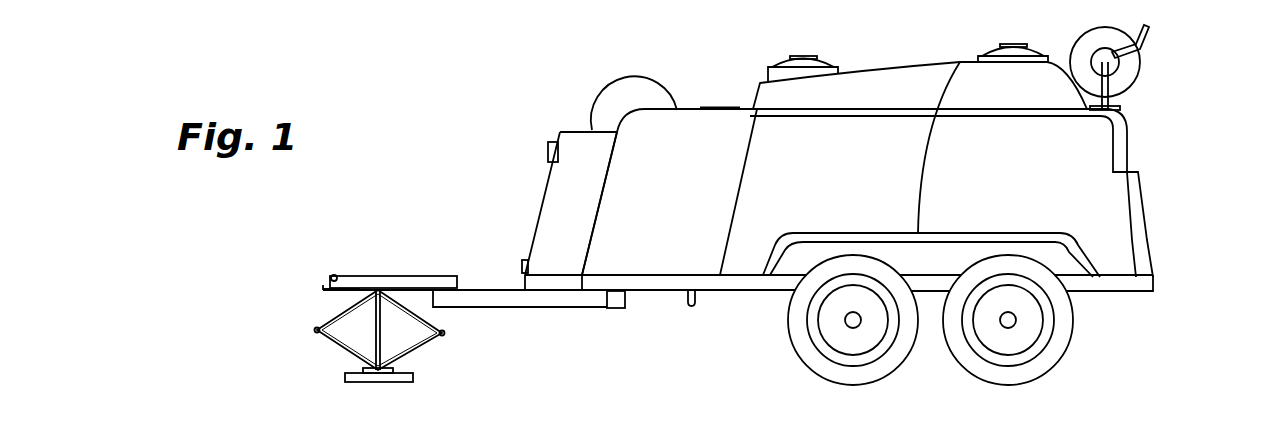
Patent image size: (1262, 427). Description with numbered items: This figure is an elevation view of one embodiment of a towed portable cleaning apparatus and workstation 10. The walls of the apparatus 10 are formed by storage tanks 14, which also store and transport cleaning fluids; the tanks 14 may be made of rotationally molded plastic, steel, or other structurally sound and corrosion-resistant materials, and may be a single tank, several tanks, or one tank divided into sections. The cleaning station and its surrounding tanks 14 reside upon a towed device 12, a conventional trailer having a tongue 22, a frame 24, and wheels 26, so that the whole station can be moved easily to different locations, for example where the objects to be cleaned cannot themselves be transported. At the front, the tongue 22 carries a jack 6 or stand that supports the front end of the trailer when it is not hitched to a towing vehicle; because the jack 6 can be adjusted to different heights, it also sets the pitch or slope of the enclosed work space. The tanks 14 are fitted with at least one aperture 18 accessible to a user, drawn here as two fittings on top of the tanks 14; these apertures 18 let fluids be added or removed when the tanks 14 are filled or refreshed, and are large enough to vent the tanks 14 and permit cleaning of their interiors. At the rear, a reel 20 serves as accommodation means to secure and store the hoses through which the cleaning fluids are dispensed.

The jack 6 is at (315, 363).
The portable workstation cleaning apparatus 10 is at (512, 122).
The towed device 12 is at (505, 314).
The storage tanks 14 is at (1103, 166).
The aperture 18 is at (790, 44).
The reel 20 is at (1125, 87).
The tongue 22 is at (368, 258).
The frame 24 is at (640, 305).
The wheels 26 is at (947, 366).